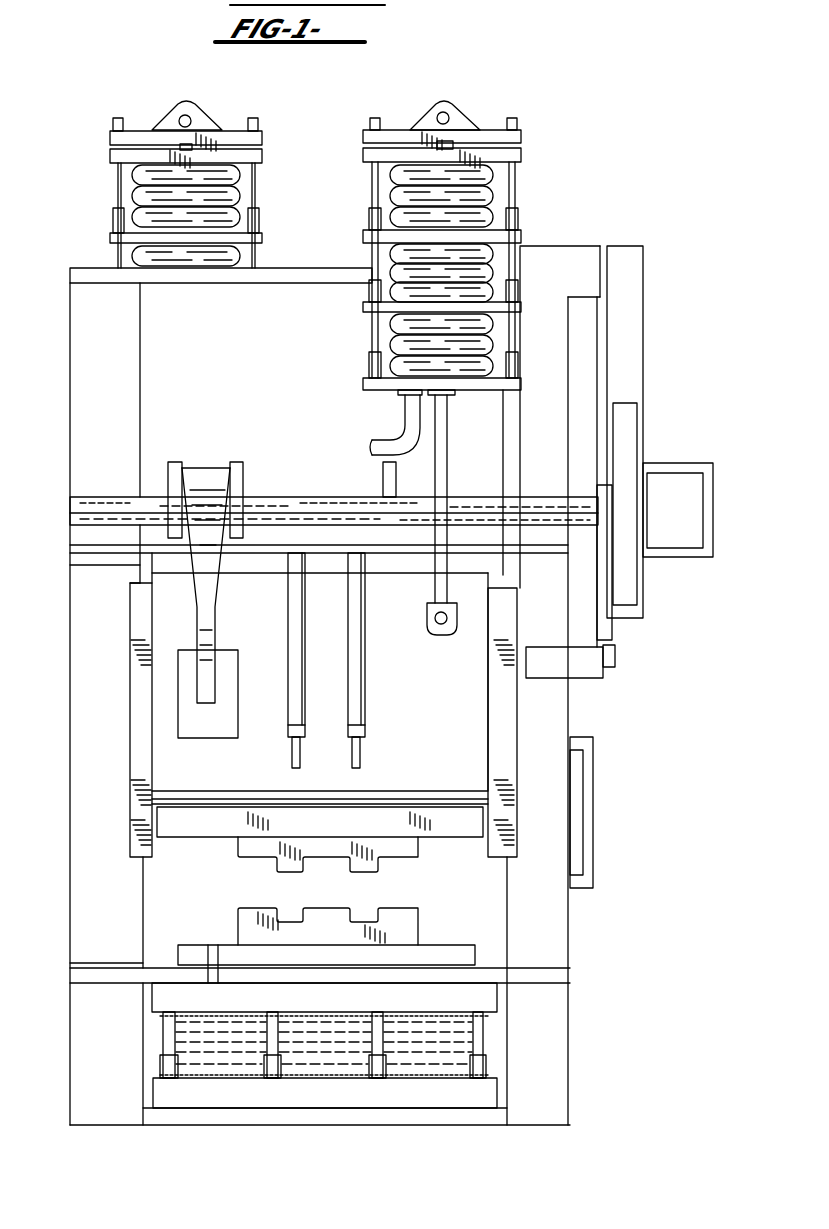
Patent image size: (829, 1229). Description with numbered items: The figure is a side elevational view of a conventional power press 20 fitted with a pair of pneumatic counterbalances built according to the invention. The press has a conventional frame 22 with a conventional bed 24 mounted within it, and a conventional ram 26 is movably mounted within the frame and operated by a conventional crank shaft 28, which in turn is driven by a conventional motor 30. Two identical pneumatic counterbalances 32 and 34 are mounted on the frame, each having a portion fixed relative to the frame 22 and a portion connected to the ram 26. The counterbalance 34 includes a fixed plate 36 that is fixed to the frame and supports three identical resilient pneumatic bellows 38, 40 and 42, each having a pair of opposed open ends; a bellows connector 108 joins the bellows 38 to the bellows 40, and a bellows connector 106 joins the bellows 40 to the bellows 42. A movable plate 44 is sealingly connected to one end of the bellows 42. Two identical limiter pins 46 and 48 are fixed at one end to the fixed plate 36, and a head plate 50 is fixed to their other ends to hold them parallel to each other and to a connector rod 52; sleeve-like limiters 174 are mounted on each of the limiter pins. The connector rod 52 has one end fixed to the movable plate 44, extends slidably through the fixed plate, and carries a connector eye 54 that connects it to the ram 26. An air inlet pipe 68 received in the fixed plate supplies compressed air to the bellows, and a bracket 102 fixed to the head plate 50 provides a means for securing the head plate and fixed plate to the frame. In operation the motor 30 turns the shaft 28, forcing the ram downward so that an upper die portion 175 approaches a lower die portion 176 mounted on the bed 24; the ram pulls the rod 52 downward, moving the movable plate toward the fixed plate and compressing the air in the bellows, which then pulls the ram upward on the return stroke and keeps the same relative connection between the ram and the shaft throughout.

The power press 20 is at (596, 240).
The frame 22 is at (95, 348).
The bed 24 is at (465, 958).
The ram 26 is at (472, 728).
The crank shaft 28 is at (543, 505).
The motor 30 is at (668, 530).
The pneumatic counterbalance 32 is at (108, 198).
The pneumatic counterbalance 34 is at (441, 238).
The fixed plate 36 is at (372, 383).
The resilient pneumatic bellows 38 is at (392, 338).
The resilient pneumatic bellows 40 is at (392, 268).
The resilient pneumatic bellows 42 is at (392, 175).
The movable plate 44 is at (365, 156).
The limiter pin 46 is at (372, 193).
The limiter pin 48 is at (516, 192).
The head plate 50 is at (485, 135).
The connector rod 52 is at (444, 462).
The connector eye 54 is at (432, 626).
The air inlet pipe 68 is at (386, 443).
The bracket 102 is at (457, 120).
The bellows connector 106 is at (370, 240).
The bellows connector 108 is at (366, 305).
The limiter 174 is at (516, 220).
The upper die portion 175 is at (388, 847).
The lower die portion 176 is at (405, 920).